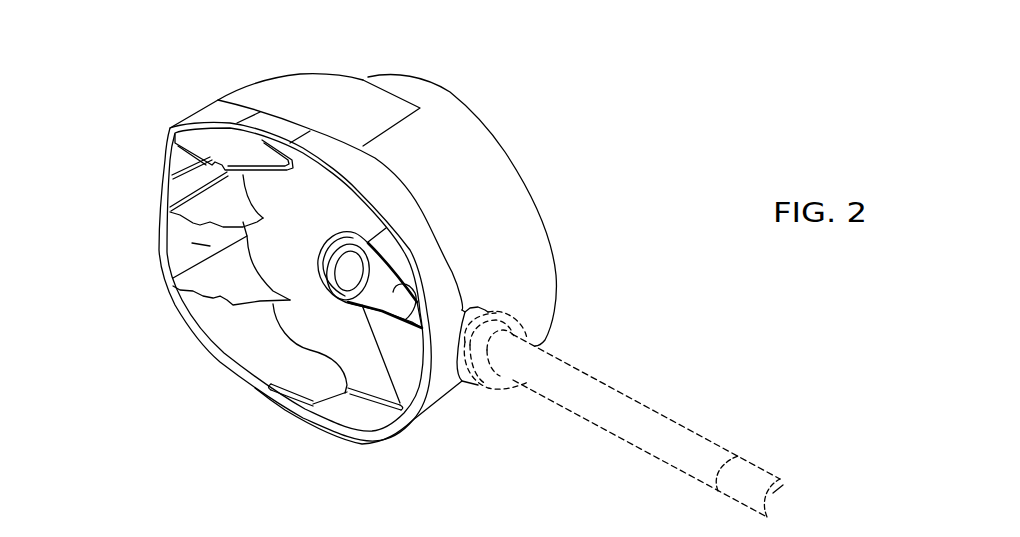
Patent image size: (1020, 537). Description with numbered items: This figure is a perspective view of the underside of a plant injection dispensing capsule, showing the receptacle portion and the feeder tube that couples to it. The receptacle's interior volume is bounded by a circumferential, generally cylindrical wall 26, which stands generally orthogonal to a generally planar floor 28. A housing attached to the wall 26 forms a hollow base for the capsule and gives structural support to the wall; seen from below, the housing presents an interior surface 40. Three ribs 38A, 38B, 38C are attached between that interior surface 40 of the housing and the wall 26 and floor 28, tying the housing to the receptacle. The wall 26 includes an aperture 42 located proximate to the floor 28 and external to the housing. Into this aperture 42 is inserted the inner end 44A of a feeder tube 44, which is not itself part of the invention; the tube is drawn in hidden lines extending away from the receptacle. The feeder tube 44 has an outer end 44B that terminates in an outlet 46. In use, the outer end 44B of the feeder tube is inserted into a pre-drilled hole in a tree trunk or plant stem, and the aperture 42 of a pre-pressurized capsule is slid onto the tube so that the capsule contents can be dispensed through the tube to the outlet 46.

The wall 26 is at (207, 103).
The floor 28 is at (301, 255).
The rib 38A is at (177, 163).
The rib 38B is at (205, 226).
The rib 38C is at (220, 297).
The interior surface 40 is at (200, 246).
The aperture 42 is at (486, 310).
The feeder tube 44 is at (598, 435).
The inner end 44A is at (527, 324).
The outer end 44B is at (753, 466).
The outlet 46 is at (776, 495).